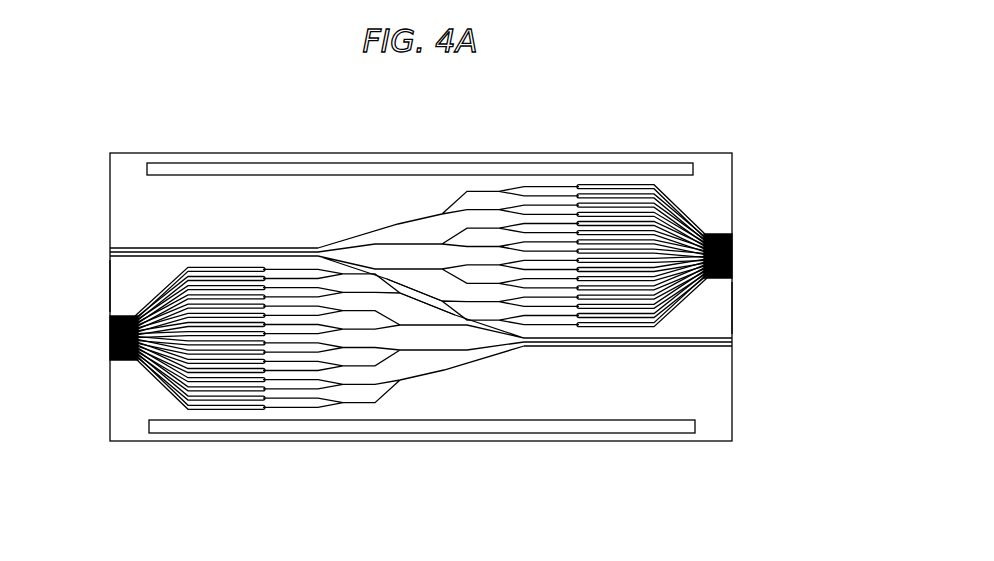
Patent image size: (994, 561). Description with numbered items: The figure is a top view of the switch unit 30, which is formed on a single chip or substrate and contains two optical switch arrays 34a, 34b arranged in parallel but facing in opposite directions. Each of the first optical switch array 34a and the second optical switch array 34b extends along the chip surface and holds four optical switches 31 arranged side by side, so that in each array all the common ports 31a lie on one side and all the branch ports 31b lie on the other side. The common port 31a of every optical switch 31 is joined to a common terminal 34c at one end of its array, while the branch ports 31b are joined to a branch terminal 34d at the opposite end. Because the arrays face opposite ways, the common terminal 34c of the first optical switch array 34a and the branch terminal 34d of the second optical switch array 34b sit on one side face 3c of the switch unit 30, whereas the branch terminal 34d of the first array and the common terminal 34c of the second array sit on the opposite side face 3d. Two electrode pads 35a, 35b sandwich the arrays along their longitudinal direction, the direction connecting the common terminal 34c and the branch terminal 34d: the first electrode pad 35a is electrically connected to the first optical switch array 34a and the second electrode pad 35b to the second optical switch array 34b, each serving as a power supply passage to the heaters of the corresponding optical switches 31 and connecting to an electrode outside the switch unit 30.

The switch unit 30 is at (708, 424).
The optical switch 31 is at (420, 298).
The common port 31a is at (402, 220).
The branch port 31b is at (209, 412).
The first optical switch array 34a is at (470, 486).
The second optical switch array 34b is at (416, 201).
The common terminal 34c is at (106, 252).
The branch terminal 34d is at (107, 342).
The first electrode pad 35a is at (273, 428).
The second electrode pad 35b is at (584, 168).
The side face 3c is at (734, 310).
The side face 3d is at (108, 292).